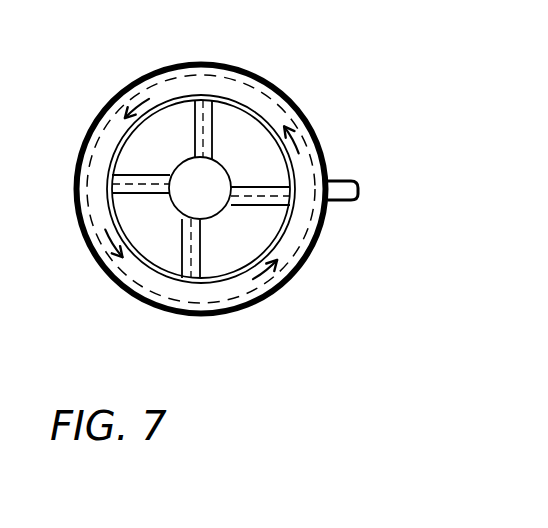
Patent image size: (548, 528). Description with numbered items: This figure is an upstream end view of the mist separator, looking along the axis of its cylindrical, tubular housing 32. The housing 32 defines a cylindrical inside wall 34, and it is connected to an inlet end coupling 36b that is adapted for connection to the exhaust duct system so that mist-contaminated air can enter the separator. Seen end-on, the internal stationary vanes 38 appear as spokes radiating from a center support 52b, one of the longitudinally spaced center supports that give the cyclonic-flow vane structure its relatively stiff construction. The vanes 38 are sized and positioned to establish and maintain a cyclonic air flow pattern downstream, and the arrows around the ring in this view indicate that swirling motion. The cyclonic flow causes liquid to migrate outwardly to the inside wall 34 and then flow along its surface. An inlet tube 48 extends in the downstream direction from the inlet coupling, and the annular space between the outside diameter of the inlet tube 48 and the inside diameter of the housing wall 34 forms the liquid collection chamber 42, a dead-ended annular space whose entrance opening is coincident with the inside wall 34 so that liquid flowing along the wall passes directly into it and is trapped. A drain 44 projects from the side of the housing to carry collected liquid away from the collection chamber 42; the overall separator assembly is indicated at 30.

The flow device 30 is at (333, 121).
The housing 32 is at (310, 138).
The inside wall 34 is at (304, 258).
The inlet end coupling 36b is at (103, 213).
The stationary vanes 38 is at (161, 134).
The liquid collection chamber 42 is at (93, 155).
The drain 44 is at (346, 203).
The inlet tube 48 is at (210, 282).
The center support 52b is at (220, 176).